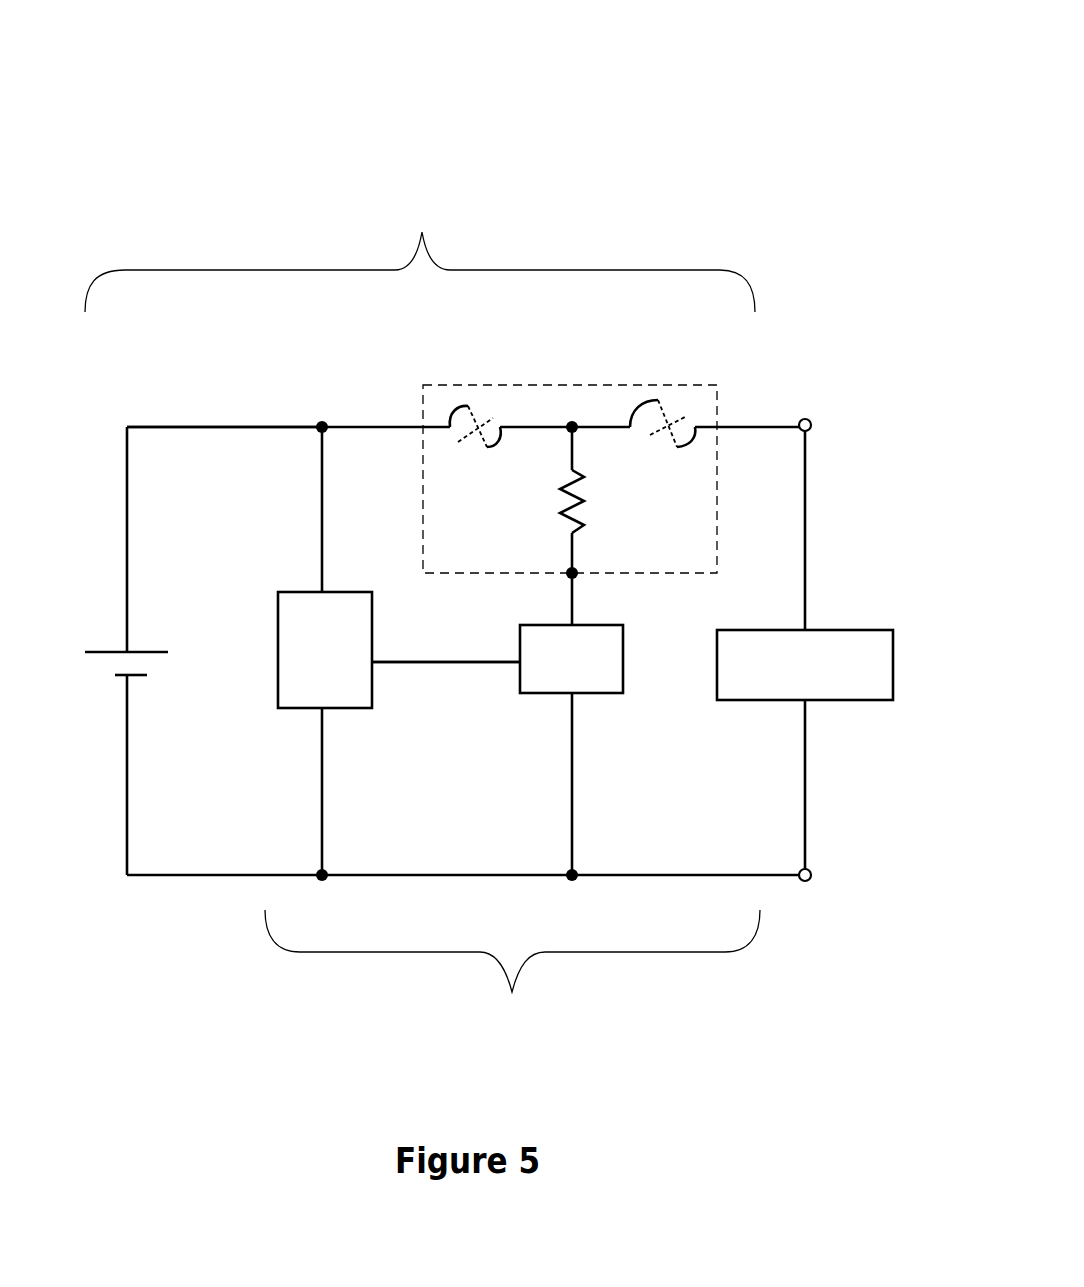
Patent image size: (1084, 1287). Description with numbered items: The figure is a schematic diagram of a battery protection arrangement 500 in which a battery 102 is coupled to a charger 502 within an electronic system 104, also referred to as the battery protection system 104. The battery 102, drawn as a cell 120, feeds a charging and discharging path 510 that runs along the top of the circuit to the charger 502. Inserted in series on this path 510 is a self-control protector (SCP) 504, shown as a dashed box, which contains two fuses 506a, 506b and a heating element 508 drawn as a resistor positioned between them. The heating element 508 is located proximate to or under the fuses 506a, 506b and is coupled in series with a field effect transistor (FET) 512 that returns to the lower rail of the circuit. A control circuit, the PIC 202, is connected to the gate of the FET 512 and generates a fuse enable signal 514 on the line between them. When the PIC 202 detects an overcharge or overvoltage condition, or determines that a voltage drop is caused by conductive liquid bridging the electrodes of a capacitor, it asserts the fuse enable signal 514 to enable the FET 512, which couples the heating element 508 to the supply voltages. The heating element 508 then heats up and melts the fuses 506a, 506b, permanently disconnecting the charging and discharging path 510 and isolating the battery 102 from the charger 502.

The battery protection circuit 500 is at (819, 72).
The battery 102 is at (420, 255).
The electronic system 104 is at (512, 972).
The battery cell 120 is at (117, 650).
The charging and discharging path 510 is at (168, 427).
The PIC 202 is at (325, 650).
The self-control protector (SCP) 504 is at (717, 510).
The fuse 506a is at (482, 417).
The fuse 506b is at (677, 405).
The heating element 508 is at (550, 492).
The field effect transistor (FET) 512 is at (527, 678).
The fuse enable signal 514 is at (430, 665).
The charger 502 is at (843, 630).